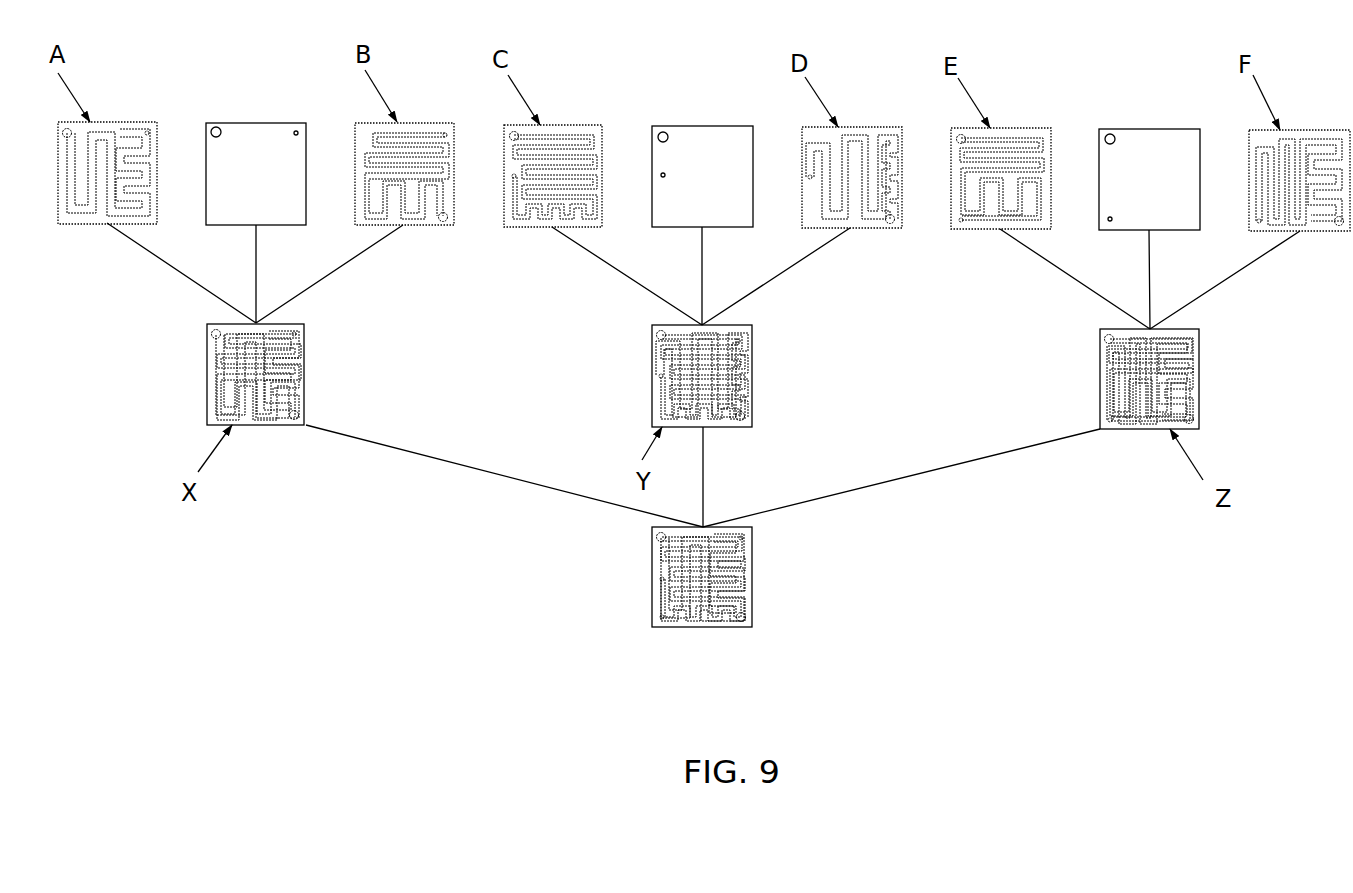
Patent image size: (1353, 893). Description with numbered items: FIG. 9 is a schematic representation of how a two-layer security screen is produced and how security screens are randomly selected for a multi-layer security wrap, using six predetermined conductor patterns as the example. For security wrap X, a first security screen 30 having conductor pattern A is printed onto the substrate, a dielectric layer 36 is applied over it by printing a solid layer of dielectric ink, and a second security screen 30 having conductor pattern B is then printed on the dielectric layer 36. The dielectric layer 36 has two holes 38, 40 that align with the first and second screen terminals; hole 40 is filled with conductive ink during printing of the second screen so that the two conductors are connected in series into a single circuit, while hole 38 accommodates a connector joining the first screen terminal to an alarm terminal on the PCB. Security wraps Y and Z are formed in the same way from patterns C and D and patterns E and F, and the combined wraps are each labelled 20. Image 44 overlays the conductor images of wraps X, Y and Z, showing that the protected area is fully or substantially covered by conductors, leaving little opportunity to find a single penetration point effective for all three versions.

The composite sensor array 20 is at (306, 370).
The security screen 30 is at (73, 223).
The dielectric layer 36 is at (285, 225).
The hole 38 is at (216, 127).
The hole 40 is at (297, 131).
The image 44 is at (752, 582).